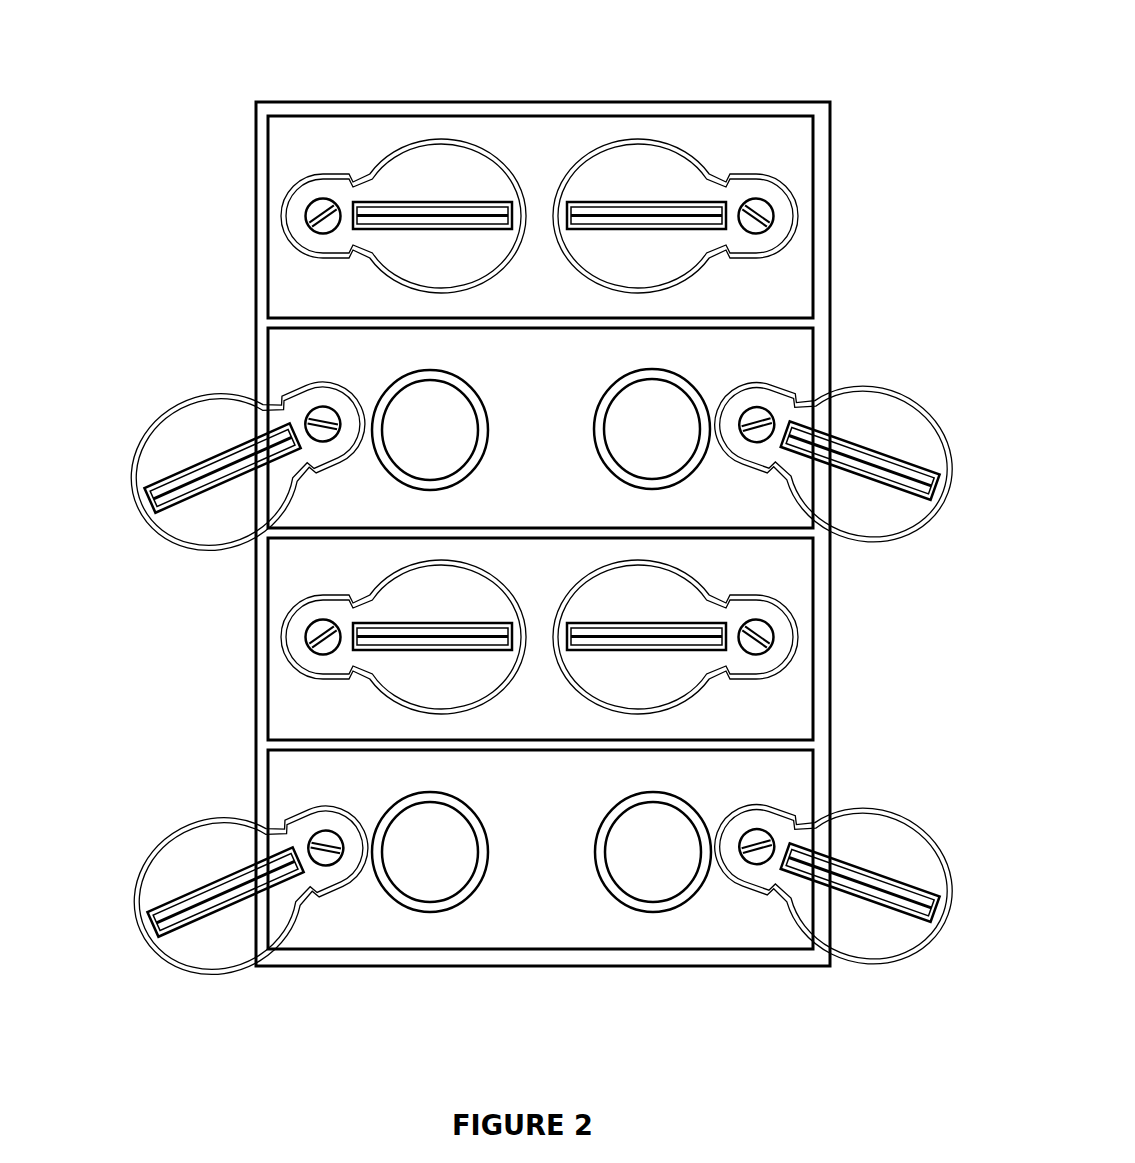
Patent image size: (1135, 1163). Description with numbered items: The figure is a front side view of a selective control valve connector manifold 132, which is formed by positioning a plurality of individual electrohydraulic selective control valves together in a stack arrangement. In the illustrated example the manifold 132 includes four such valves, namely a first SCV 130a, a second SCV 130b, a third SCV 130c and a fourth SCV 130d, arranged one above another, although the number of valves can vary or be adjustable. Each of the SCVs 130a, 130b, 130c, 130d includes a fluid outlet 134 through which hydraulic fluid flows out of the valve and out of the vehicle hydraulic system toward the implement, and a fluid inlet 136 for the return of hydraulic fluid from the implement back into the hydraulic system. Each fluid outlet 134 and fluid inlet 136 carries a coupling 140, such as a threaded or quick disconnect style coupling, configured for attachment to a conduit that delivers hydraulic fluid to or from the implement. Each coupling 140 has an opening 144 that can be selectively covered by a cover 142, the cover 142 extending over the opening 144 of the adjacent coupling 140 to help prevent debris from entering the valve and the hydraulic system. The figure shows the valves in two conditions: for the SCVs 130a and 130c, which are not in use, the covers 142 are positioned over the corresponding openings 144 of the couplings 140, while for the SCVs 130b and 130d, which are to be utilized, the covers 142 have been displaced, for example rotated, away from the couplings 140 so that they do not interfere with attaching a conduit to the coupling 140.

The selective control valve connector manifold 132 is at (807, 56).
The electrohydraulic selective control valve 130a is at (270, 164).
The electrohydraulic selective control valve 130b is at (268, 358).
The electrohydraulic selective control valve 130c is at (270, 687).
The electrohydraulic selective control valve 130d is at (272, 774).
The cover 142 is at (412, 163).
The opening 144 is at (541, 640).
The fluid outlet 134 is at (692, 472).
The fluid inlet 136 is at (405, 483).
The coupling 140 is at (501, 704).